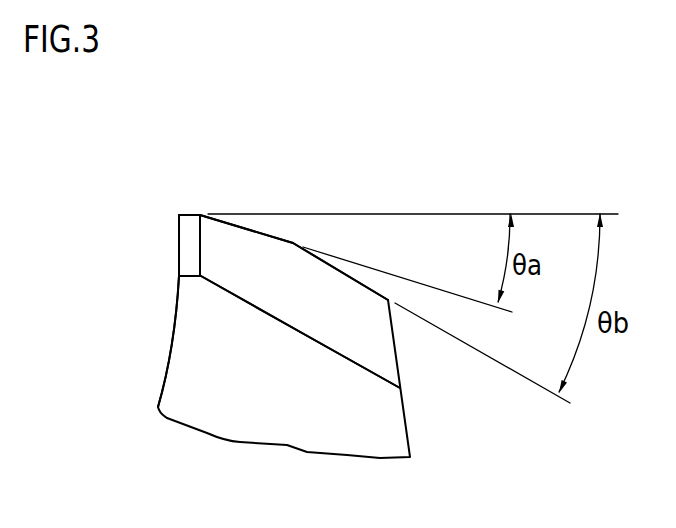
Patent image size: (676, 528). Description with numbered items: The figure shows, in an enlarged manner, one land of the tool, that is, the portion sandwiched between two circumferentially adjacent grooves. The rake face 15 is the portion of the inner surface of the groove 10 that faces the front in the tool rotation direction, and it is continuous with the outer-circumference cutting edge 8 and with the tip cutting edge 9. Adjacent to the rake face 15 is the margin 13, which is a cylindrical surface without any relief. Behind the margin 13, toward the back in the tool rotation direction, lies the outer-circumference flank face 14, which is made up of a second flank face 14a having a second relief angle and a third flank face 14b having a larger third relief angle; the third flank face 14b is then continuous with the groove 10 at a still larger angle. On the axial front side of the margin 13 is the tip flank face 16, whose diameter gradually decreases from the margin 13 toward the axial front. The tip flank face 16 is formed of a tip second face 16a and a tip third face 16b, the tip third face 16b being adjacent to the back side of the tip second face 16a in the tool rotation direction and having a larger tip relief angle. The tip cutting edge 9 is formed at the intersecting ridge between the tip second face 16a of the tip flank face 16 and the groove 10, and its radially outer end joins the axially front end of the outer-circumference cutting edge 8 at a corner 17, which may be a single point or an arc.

The outer-circumference cutting edge 8 is at (180, 216).
The corner 17 is at (187, 220).
The tip cutting edge 9 is at (178, 243).
The groove 10 is at (165, 387).
The margin 13 is at (188, 214).
The outer-circumference flank face 14 is at (412, 162).
The second flank face 14a is at (280, 238).
The third flank face 14b is at (356, 280).
The rake face 15 is at (178, 310).
The tip flank face 16 is at (318, 376).
The tip second face 16a is at (192, 264).
The tip third face 16b is at (292, 310).